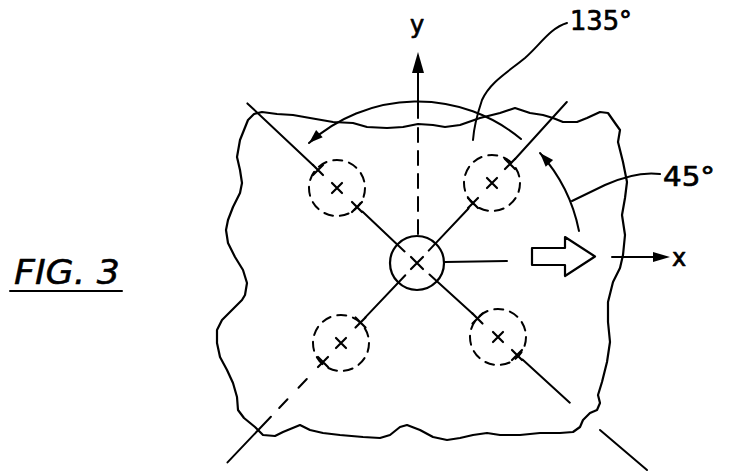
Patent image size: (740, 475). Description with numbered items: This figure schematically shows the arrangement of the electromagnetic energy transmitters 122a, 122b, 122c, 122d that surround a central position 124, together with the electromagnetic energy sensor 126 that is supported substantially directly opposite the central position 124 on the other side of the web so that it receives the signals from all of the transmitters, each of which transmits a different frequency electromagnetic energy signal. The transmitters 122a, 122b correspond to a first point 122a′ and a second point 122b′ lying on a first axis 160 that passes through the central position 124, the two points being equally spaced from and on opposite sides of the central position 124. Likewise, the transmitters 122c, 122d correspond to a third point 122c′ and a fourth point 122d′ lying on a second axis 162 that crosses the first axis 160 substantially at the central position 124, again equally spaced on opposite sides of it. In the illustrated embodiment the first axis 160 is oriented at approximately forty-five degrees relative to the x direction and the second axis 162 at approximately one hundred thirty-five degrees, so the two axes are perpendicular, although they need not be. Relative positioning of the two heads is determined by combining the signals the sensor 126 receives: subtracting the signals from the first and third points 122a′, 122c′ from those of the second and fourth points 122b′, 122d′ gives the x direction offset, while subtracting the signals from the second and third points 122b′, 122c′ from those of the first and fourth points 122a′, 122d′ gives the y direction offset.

The electromagnetic energy transmitter 122a is at (497, 211).
The first point 122a′ is at (503, 168).
The electromagnetic energy transmitter 122b is at (343, 371).
The second point 122b′ is at (346, 343).
The electromagnetic energy transmitter 122c is at (524, 353).
The third point 122c′ is at (498, 342).
The electromagnetic energy transmitter 122d is at (310, 198).
The fourth point 122d′ is at (339, 190).
The central position 124 is at (390, 263).
The electromagnetic energy sensor 126 is at (388, 279).
The first axis 160 is at (241, 448).
The second axis 162 is at (626, 451).